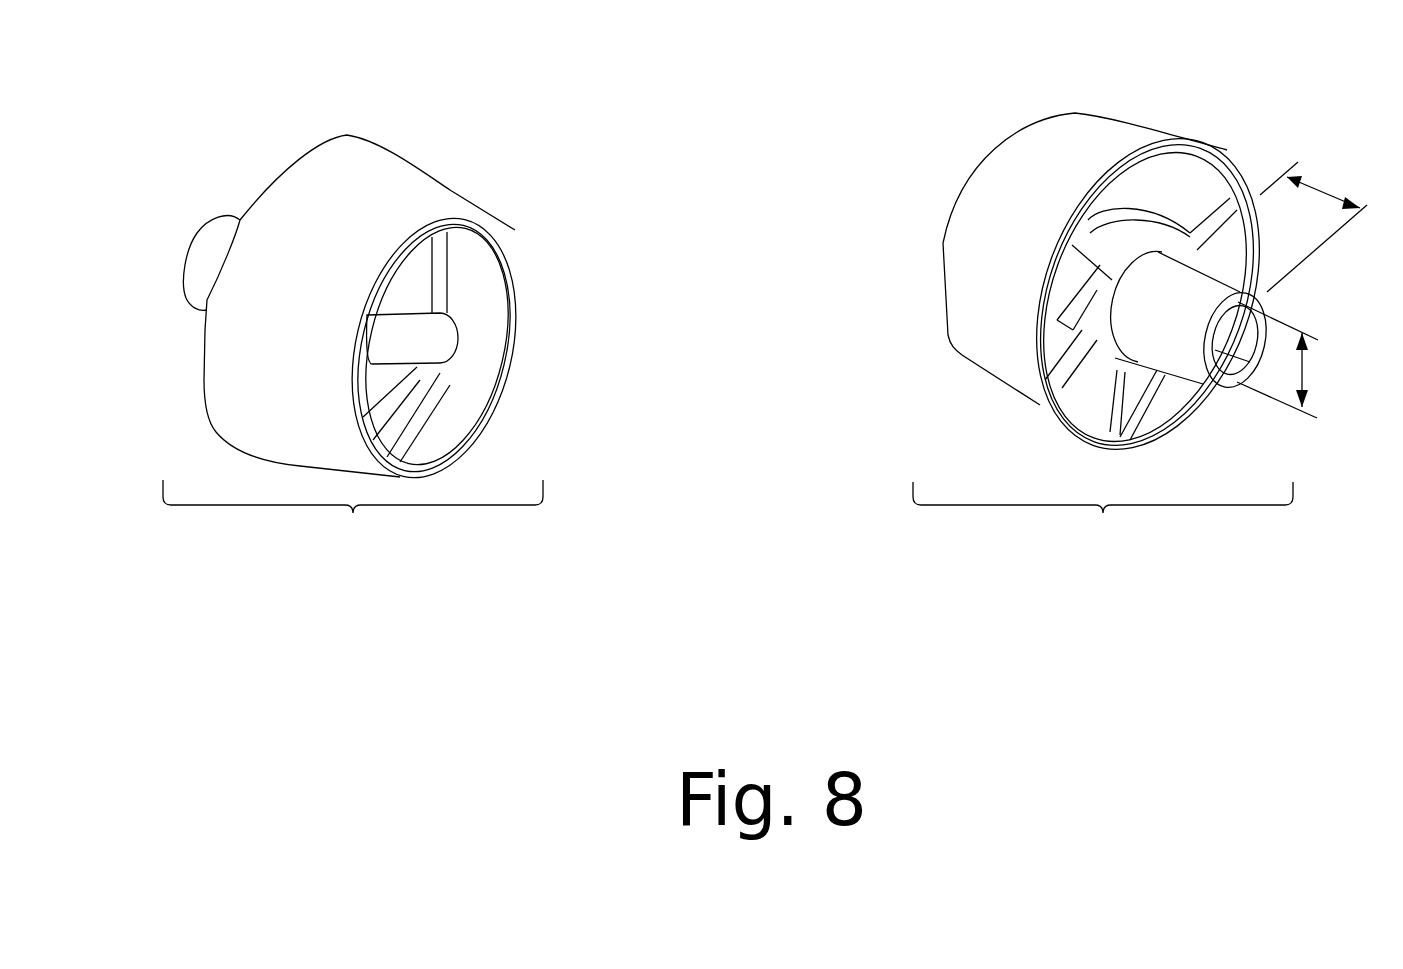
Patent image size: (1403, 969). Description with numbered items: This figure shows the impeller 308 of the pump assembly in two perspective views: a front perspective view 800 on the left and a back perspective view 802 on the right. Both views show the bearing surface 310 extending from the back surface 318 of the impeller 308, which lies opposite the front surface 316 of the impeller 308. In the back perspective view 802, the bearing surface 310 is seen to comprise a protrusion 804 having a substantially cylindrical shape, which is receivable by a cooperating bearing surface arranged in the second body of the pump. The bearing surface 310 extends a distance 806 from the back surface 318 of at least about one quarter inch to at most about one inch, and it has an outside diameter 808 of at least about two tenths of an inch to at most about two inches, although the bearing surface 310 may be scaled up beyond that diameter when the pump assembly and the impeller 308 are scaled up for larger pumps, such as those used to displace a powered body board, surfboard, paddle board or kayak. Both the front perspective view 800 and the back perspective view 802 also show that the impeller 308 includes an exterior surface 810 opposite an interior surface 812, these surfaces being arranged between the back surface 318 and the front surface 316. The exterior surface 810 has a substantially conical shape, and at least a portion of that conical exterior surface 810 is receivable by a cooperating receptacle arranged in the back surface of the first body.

The impeller 308 is at (195, 70).
The bearing surface 310 is at (185, 272).
The front surface 316 is at (497, 390).
The back surface 318 is at (190, 345).
The front perspective view 800 is at (353, 510).
The back perspective view 802 is at (1103, 512).
The protrusion 804 is at (1215, 405).
The distance 806 is at (1323, 188).
The outside diameter 808 is at (1303, 370).
The exterior surface 810 is at (268, 437).
The interior surface 812 is at (440, 437).